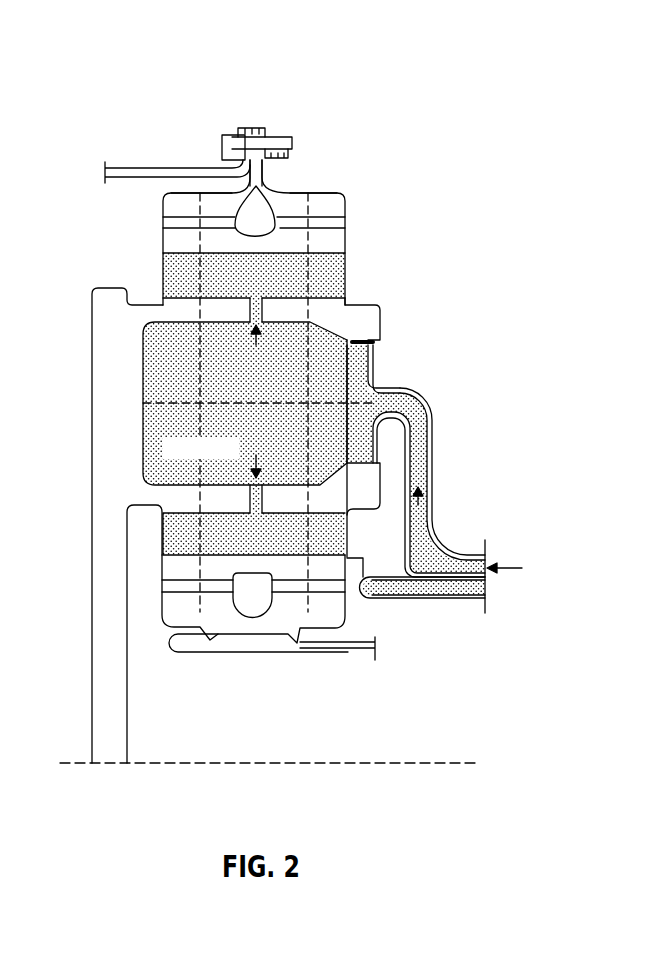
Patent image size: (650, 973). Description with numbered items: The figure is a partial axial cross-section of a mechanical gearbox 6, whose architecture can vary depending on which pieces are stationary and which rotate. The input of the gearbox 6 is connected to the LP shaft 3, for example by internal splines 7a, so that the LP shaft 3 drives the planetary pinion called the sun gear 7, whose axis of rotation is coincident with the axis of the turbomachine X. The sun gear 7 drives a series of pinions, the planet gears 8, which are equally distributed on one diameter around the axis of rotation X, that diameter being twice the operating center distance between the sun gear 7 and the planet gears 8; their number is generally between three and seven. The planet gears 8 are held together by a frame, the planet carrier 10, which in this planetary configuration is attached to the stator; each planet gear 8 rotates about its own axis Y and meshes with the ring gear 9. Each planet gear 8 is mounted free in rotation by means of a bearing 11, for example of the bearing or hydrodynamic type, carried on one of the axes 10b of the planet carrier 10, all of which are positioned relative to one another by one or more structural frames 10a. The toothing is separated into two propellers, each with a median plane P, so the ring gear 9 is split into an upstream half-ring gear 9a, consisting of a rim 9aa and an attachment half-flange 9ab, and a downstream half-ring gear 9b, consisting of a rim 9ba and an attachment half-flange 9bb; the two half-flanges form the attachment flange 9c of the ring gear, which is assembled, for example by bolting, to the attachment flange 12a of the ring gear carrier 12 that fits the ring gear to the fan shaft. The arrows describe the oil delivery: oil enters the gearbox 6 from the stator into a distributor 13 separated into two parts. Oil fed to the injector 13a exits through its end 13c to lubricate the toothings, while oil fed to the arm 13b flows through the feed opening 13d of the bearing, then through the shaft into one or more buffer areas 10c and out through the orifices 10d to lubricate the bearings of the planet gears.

The LP shaft 3 is at (353, 645).
The gearbox 6 is at (455, 256).
The sun gear 7 is at (195, 636).
The internal splines 7a is at (237, 637).
The planet gears 8 is at (173, 568).
The ring gear 9 is at (252, 214).
The upstream half-ring gear 9a is at (178, 204).
The rim 9aa is at (190, 200).
The attachment half-flange 9ab is at (250, 128).
The downstream half-ring gear 9b is at (330, 210).
The rim 9ba is at (300, 197).
The attachment half-flange 9bb is at (293, 117).
The attachment flange of the ring gear 9c is at (265, 93).
The planet carrier 10 is at (268, 422).
The structural frame 10a is at (102, 367).
The axes 10b is at (370, 483).
The buffer areas 10c is at (245, 403).
The orifices 10d is at (260, 303).
The bearing 11 is at (345, 280).
The ring gear carrier 12 is at (137, 168).
The attachment flange of the ring gear carrier 12a is at (238, 128).
The distributor 13 is at (445, 513).
The injector 13a is at (448, 595).
The arm 13b is at (433, 452).
The end 13c is at (362, 572).
The feed opening of the bearing 13d is at (372, 348).
The median plane P is at (193, 613).
The axis of rotation of the turbomachine X is at (470, 765).
The axis of the planet gear Y is at (365, 380).